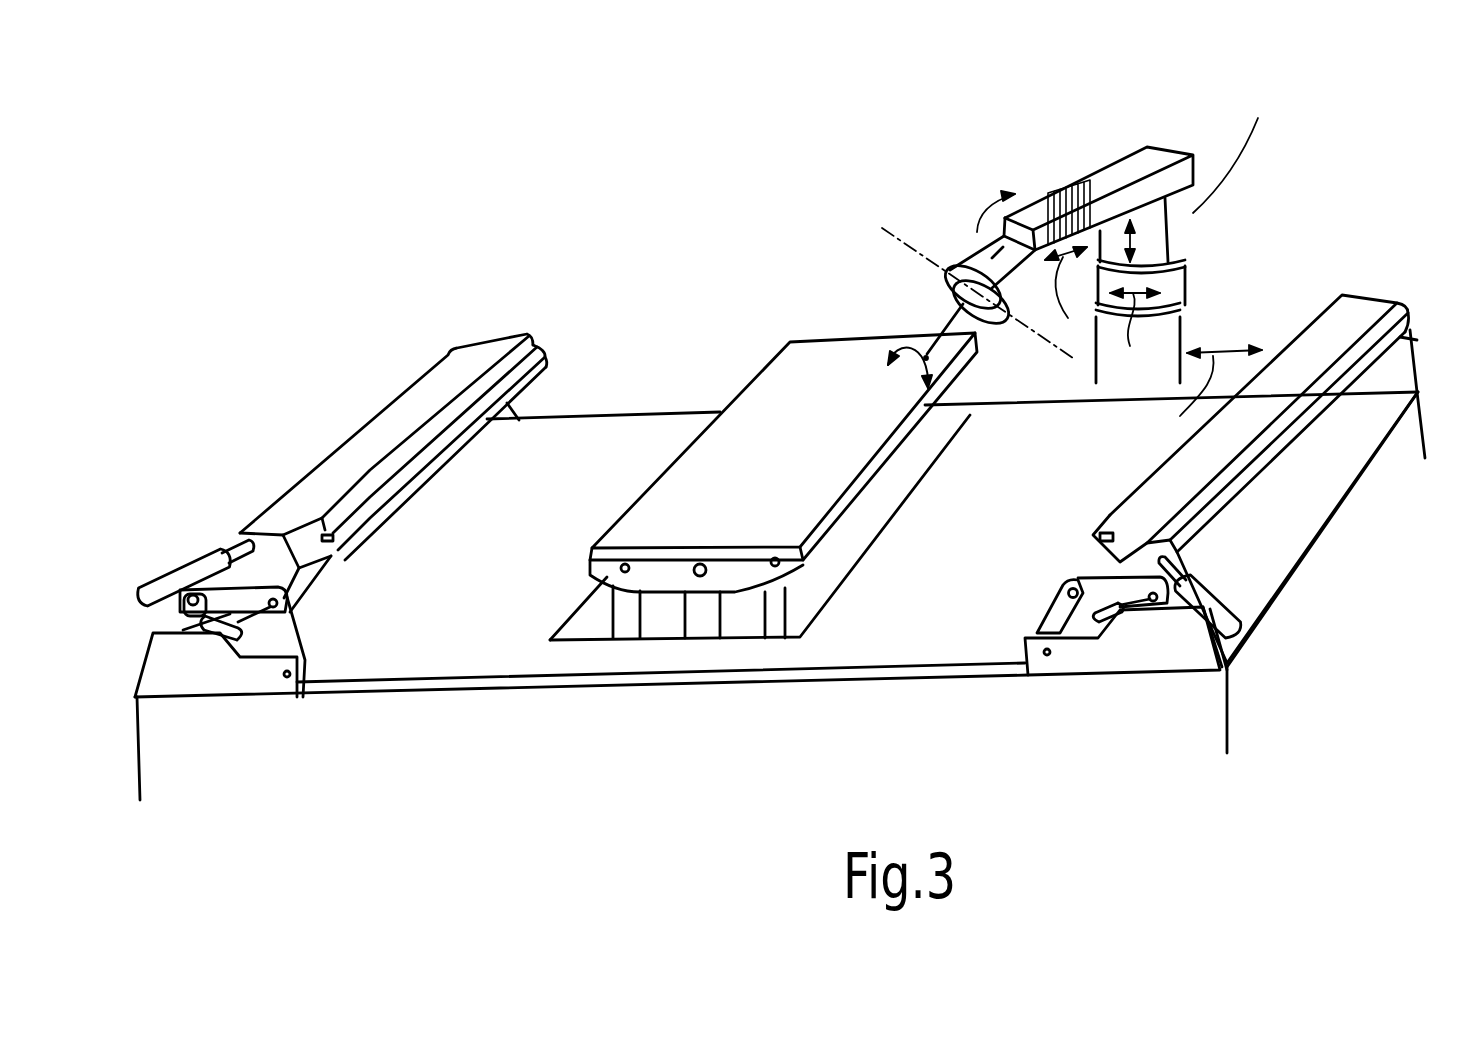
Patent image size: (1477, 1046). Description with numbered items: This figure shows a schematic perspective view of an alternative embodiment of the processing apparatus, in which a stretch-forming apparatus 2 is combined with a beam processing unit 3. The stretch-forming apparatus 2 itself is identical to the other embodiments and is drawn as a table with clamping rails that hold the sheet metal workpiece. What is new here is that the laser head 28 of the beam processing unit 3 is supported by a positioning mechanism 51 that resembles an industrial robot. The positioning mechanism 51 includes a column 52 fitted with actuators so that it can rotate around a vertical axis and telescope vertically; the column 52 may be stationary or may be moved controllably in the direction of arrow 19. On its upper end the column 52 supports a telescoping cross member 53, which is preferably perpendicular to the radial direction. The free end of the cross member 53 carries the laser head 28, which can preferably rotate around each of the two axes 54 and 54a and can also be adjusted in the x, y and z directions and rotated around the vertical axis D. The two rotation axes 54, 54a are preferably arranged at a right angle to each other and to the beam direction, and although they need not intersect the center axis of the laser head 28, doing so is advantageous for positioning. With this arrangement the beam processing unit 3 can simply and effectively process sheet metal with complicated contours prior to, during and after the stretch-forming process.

The stretch-forming apparatus 2 is at (780, 565).
The beam processing unit 3 is at (1140, 241).
The arrow 19 is at (1223, 350).
The laser head 28 is at (950, 300).
The positioning mechanism 51 is at (1076, 200).
The column 52 is at (1147, 253).
The telescoping cross member 53 is at (1107, 177).
The rotation axis 54 is at (980, 205).
The rotation axis 54a is at (888, 376).